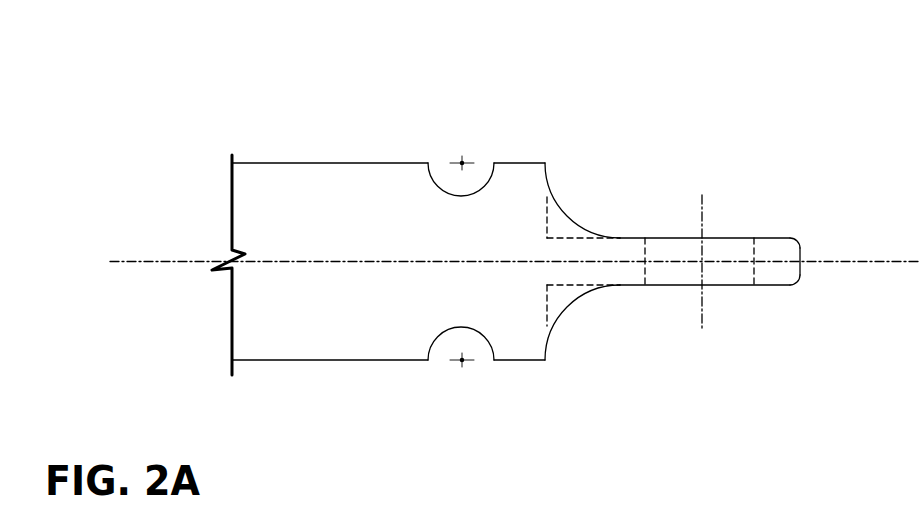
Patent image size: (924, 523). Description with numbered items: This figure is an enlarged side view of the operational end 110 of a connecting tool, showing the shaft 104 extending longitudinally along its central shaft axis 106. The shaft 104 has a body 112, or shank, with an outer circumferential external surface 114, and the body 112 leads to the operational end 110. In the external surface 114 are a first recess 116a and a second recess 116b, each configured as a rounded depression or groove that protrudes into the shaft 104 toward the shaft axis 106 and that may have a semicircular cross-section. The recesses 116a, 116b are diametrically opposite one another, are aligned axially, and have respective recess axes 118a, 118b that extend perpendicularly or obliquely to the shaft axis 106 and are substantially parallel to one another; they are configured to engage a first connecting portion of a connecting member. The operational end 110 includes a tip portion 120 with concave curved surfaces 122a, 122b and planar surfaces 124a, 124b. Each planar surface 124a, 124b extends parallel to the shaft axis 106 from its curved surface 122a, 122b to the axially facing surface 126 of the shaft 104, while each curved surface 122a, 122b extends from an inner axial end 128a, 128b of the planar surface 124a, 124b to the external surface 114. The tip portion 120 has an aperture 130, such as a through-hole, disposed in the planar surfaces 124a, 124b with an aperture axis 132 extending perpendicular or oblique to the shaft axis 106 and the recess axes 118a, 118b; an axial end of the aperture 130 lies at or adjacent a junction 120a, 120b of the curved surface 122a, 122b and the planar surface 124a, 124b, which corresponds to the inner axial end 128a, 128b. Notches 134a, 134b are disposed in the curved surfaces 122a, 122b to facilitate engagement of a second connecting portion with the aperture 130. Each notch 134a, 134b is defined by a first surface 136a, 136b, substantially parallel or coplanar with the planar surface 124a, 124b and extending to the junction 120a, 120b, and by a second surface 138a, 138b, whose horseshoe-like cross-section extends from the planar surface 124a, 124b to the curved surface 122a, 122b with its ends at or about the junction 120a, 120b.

The shaft 104 is at (255, 369).
The shaft axis 106 is at (277, 264).
The operational end 110 is at (296, 120).
The body 112 is at (268, 162).
The external surface 114 is at (345, 324).
The first recess 116a is at (440, 188).
The second recess 116b is at (440, 338).
The recess axis 118a is at (462, 160).
The recess axis 118b is at (463, 363).
The tip portion 120 is at (759, 344).
The junction 120a is at (629, 231).
The junction 120b is at (629, 291).
The curved surface 122a is at (547, 178).
The curved surface 122b is at (547, 346).
The planar surface 124a is at (776, 231).
The planar surface 124b is at (778, 291).
The axially facing surface 126 is at (804, 268).
The inner axial end 128a is at (650, 231).
The inner axial end 128b is at (650, 291).
The aperture 130 is at (702, 220).
The aperture axis 132 is at (744, 231).
The notch 134a is at (586, 237).
The notch 134b is at (586, 285).
The first surface 136a is at (593, 237).
The first surface 136b is at (593, 285).
The second surface 138a is at (564, 231).
The second surface 138b is at (564, 291).